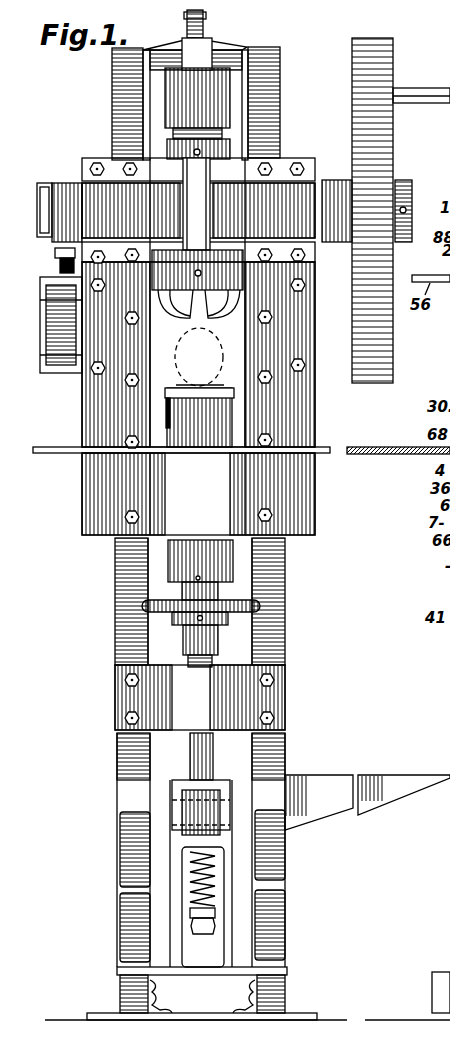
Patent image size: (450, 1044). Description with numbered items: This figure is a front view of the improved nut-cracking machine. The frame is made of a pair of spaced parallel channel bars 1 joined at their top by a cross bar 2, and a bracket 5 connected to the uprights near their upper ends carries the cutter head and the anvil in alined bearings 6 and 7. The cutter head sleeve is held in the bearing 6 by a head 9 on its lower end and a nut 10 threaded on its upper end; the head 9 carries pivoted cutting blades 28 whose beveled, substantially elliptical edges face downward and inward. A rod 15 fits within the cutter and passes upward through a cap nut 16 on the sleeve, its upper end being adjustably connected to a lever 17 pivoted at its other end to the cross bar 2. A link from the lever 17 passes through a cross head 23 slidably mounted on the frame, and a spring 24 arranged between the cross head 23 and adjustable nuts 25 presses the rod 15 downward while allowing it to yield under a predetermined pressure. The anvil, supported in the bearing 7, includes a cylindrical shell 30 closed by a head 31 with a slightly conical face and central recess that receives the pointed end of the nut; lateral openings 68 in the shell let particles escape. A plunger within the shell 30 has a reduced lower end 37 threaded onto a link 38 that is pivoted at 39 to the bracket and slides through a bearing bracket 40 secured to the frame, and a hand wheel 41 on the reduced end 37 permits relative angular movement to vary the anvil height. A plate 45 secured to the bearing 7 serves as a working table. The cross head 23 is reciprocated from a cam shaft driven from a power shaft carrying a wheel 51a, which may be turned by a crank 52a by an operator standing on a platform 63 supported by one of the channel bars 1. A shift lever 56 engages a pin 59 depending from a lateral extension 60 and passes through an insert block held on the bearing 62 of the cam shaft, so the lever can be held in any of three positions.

The channel bars 1 is at (268, 50).
The cross bar 2 is at (235, 42).
The bracket 5 is at (305, 330).
The bearing 6 is at (215, 212).
The bearing 7 is at (215, 497).
The head 9 is at (160, 278).
The nut 10 is at (230, 147).
The rod 15 is at (188, 24).
The cap nut 16 is at (230, 100).
The lever 17 is at (203, 17).
The cross head 23 is at (230, 945).
The spring 24 is at (225, 880).
The adjustable stops or nuts 25 is at (230, 920).
The cutting blade 28 is at (170, 320).
The cylindrical shell 30 is at (170, 404).
The head 31 is at (178, 385).
The reduced lower end of plunger 37 is at (218, 640).
The link 38 is at (215, 757).
The pivot 39 is at (265, 845).
The bearing bracket 40 is at (245, 720).
The hand wheel 41 is at (262, 600).
The plate 45 is at (68, 453).
The wheel 51a is at (362, 40).
The crank 52a is at (410, 90).
The shift lever 56 is at (72, 278).
The pin 59 is at (80, 258).
The lateral extension 60 is at (65, 248).
The bearing 62 is at (55, 372).
The platform 63 is at (305, 775).
The lateral openings 68 is at (165, 422).